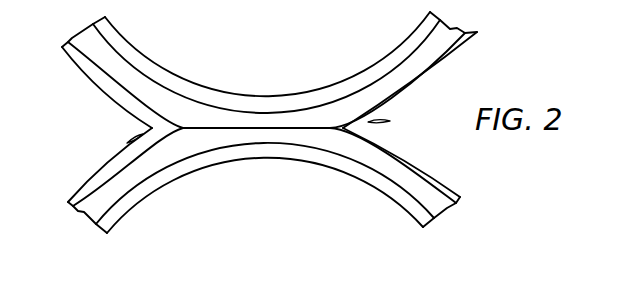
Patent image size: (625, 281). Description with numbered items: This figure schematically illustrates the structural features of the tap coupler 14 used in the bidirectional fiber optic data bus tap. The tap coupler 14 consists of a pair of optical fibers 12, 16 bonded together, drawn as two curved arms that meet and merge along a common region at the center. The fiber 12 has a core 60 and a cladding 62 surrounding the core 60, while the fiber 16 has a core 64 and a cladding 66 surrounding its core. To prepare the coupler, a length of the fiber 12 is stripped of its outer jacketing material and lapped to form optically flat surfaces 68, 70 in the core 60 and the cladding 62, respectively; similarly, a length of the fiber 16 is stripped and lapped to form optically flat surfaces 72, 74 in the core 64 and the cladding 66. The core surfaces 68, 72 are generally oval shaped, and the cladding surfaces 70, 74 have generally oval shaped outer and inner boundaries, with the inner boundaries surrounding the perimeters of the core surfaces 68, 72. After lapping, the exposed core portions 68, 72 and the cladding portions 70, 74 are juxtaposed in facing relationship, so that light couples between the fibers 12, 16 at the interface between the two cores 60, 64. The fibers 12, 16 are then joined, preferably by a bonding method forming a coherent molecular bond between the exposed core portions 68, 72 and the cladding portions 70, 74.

The optical fiber 12 is at (296, 70).
The tap coupler 14 is at (296, 146).
The optical fiber 16 is at (297, 186).
The core 60 is at (327, 102).
The cladding 62 is at (382, 60).
The core 64 is at (370, 170).
The cladding 66 is at (385, 194).
The optically flat core surface 68 is at (285, 129).
The optically flat cladding surface 70 is at (127, 143).
The optically flat core surface 72 is at (217, 127).
The optically flat cladding surface 74 is at (372, 120).